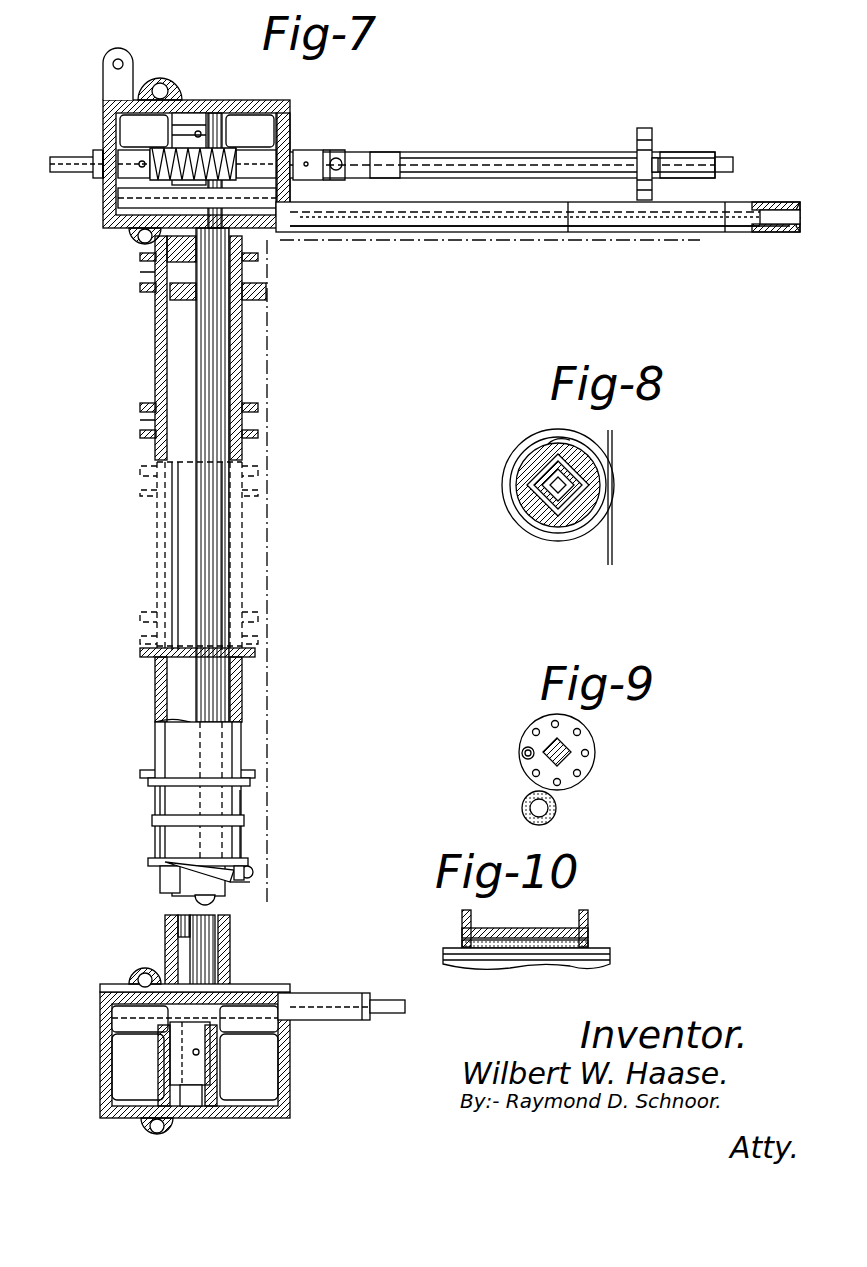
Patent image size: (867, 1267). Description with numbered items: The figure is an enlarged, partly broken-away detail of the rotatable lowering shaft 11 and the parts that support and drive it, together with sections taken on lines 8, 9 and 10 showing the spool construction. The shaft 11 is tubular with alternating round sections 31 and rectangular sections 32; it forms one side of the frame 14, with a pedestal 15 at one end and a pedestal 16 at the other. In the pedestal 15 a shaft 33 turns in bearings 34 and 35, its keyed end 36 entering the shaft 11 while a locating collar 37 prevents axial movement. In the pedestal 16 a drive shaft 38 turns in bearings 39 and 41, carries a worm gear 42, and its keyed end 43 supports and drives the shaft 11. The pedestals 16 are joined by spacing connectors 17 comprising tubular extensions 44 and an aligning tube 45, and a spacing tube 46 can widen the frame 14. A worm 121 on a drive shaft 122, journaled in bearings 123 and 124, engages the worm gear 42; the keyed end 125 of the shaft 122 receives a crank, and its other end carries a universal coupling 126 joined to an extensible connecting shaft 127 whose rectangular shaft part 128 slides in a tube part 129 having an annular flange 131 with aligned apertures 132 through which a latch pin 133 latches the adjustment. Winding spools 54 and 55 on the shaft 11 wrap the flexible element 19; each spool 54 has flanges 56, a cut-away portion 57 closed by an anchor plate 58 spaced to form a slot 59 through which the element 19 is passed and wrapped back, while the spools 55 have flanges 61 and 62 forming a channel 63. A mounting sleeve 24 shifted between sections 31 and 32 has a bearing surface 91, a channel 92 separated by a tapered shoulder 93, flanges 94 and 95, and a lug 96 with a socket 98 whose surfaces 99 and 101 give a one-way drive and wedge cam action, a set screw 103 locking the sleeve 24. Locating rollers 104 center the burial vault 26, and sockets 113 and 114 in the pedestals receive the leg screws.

In FIG. 7, the section line 8— 8 is at (80, 675).
In FIG. 7, the section line 9— 9 is at (681, 275).
In FIG. 8, the section line 10— 10 is at (520, 448).
In FIG. 7, the rotatable lowering shaft 11 is at (178, 546).
In FIG. 7, the frame 14 is at (292, 124).
In FIG. 7, the pedestal 15 is at (98, 1068).
In FIG. 7, the pedestal 16 is at (272, 100).
In FIG. 7, the spacing connector 17 is at (546, 234).
In FIG. 9, the spacing connector 17 is at (558, 810).
In FIG. 8, the flexible element 19 is at (612, 536).
In FIG. 7, the bearing or mounting sleeve 24 is at (242, 806).
In FIG. 7, the burial vault 26 is at (268, 342).
In FIG. 7, the round section 31 is at (178, 586).
In FIG. 7, the rectangular section 32 is at (168, 458).
In FIG. 10, the rectangular section 32 is at (610, 958).
In FIG. 7, the shaft 33 is at (212, 1094).
In FIG. 7, the bearing 34 is at (178, 1090).
In FIG. 7, the bearing 35 is at (152, 1034).
In FIG. 7, the keyed or rectangular end 36 is at (215, 956).
In FIG. 7, the locating collar 37 is at (170, 1060).
In FIG. 7, the drive shaft 38 is at (196, 113).
In FIG. 7, the bearing 39 is at (218, 112).
In FIG. 7, the bearing 41 is at (224, 206).
In FIG. 7, the worm gear 42 is at (250, 128).
In FIG. 7, the keyed or rectangular end 43 is at (170, 292).
In FIG. 7, the tubular extension 44 is at (448, 202).
In FIG. 7, the aligning bar or tube 45 is at (388, 206).
In FIG. 7, the spacing tube 46 is at (598, 232).
In FIG. 7, the winding spool 54 is at (156, 742).
In FIG. 8, the winding spool 54 is at (612, 480).
In FIG. 10, the winding spool 54 is at (590, 938).
In FIG. 7, the winding spool 55 is at (154, 345).
In FIG. 7, the annular flange 56 is at (140, 654).
In FIG. 8, the annular flange 56 is at (524, 530).
In FIG. 10, the annular flange 56 is at (462, 914).
In FIG. 8, the cut away portion 57 is at (536, 484).
In FIG. 8, the anchor plate 58 is at (530, 466).
In FIG. 10, the anchor plate 58 is at (501, 915).
In FIG. 8, the slot 59 is at (556, 440).
In FIG. 10, the slot 59 is at (462, 944).
In FIG. 7, the annular flange 61 is at (140, 287).
In FIG. 7, the annular flange 62 is at (140, 257).
In FIG. 7, the annular channel 63 is at (154, 272).
In FIG. 7, the annular bearing surface 91 is at (158, 838).
In FIG. 7, the annular channel 92 is at (156, 798).
In FIG. 7, the tapered shoulder 93 is at (152, 818).
In FIG. 7, the annular flange 94 is at (250, 782).
In FIG. 7, the annular flange 95 is at (148, 862).
In FIG. 7, the lug 96 is at (236, 894).
In FIG. 7, the socket 98 is at (160, 882).
In FIG. 7, the surface portion 99 is at (250, 882).
In FIG. 7, the surface portion 101 is at (199, 871).
In FIG. 7, the set screw 103 is at (254, 872).
In FIG. 7, the locating roller 104 is at (345, 240).
In FIG. 7, the socket 113 is at (128, 240).
In FIG. 7, the socket 114 is at (160, 80).
In FIG. 7, the worm 121 is at (140, 142).
In FIG. 7, the drive shaft 122 is at (102, 146).
In FIG. 7, the bearing 123 is at (144, 129).
In FIG. 7, the bearing 124 is at (268, 142).
In FIG. 7, the keyed or rectangularly formed end 125 is at (62, 157).
In FIG. 7, the universal coupling 126 is at (306, 150).
In FIG. 7, the extensible connecting shaft 127 is at (432, 152).
In FIG. 7, the shaft part 128 is at (400, 142).
In FIG. 7, the tube part 129 is at (694, 152).
In FIG. 7, the annular flange 131 is at (644, 128).
In FIG. 9, the annular flange 131 is at (592, 746).
In FIG. 9, the aligned aperture 132 is at (580, 773).
In FIG. 7, the latch pin 133 is at (656, 158).
In FIG. 9, the latch pin 133 is at (522, 754).